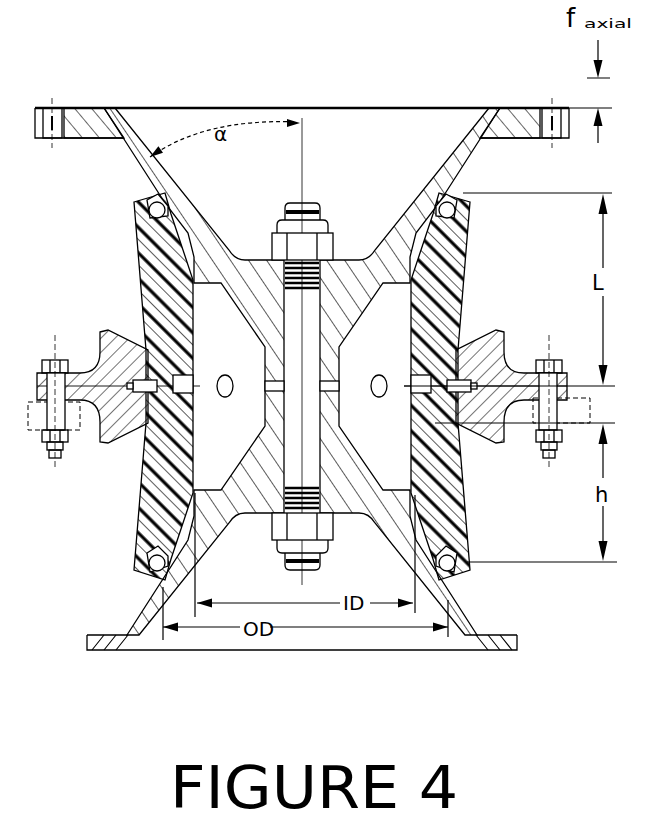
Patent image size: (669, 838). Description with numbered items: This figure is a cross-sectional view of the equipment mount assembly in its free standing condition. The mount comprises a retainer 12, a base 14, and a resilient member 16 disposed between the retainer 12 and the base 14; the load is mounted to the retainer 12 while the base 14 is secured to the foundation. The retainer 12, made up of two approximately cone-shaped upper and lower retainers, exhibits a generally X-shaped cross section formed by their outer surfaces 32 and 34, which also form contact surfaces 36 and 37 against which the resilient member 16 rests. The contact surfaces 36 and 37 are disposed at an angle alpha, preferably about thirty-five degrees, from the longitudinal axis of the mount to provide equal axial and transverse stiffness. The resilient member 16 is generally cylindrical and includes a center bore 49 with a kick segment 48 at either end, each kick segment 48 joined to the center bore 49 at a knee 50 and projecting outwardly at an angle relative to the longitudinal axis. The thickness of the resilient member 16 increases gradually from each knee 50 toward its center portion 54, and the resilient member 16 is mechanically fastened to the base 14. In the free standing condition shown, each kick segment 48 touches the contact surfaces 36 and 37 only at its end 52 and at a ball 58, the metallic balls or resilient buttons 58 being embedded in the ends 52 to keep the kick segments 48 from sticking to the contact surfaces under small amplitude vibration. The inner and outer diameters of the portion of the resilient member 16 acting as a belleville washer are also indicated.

The retainer 12 is at (77, 109).
The base 14 is at (100, 334).
The resilient member 16 is at (143, 464).
The outer surface 32 is at (142, 167).
The outer surface 34 is at (122, 633).
The contact surface 36 is at (397, 227).
The contact surface 37 is at (412, 517).
The kick segment 48 is at (143, 241).
The center bore 49 is at (460, 303).
The knee 50 is at (205, 283).
The end 52 is at (153, 197).
The center portion 54 is at (143, 303).
The ball 58 is at (153, 567).